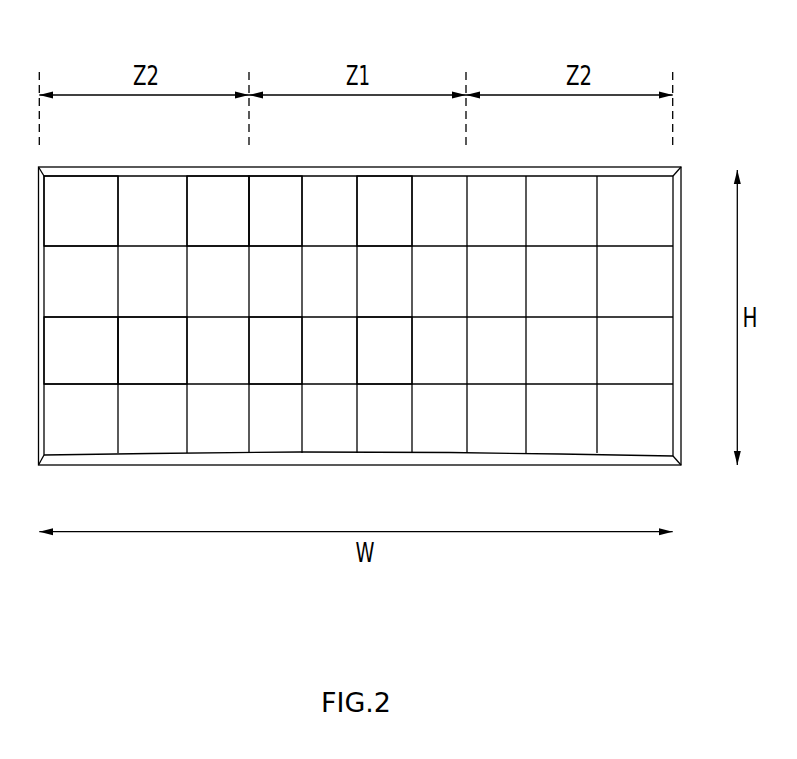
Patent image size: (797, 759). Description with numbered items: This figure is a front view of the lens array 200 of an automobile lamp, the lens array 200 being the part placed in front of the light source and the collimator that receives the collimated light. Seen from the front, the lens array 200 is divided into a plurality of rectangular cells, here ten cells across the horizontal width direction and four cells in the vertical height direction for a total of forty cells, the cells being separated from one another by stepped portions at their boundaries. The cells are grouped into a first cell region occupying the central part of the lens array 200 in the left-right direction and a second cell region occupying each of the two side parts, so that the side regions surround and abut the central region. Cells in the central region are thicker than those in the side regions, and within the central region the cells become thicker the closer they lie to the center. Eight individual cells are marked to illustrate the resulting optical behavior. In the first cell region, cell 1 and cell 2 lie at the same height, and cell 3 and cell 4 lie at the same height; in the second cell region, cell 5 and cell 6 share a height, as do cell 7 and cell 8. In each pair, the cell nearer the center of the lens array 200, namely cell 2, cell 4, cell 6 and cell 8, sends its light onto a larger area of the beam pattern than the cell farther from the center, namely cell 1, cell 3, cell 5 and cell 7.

The lens array 200 is at (72, 38).
The cell ① 1 is at (275, 211).
The cell ② 2 is at (384, 211).
The cell ③ 3 is at (275, 350).
The cell ④ 4 is at (384, 350).
The cell ⑤ 5 is at (81, 211).
The cell ⑥ 6 is at (218, 211).
The cell ⑦ 7 is at (81, 350).
The cell ⑧ 8 is at (152, 350).